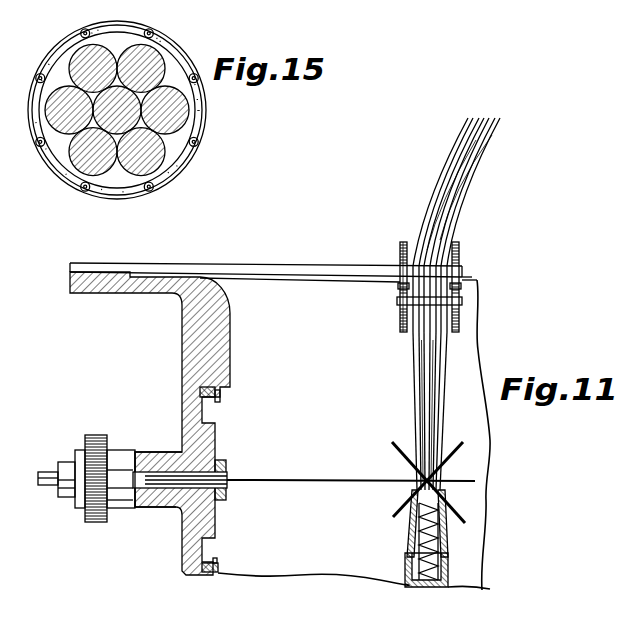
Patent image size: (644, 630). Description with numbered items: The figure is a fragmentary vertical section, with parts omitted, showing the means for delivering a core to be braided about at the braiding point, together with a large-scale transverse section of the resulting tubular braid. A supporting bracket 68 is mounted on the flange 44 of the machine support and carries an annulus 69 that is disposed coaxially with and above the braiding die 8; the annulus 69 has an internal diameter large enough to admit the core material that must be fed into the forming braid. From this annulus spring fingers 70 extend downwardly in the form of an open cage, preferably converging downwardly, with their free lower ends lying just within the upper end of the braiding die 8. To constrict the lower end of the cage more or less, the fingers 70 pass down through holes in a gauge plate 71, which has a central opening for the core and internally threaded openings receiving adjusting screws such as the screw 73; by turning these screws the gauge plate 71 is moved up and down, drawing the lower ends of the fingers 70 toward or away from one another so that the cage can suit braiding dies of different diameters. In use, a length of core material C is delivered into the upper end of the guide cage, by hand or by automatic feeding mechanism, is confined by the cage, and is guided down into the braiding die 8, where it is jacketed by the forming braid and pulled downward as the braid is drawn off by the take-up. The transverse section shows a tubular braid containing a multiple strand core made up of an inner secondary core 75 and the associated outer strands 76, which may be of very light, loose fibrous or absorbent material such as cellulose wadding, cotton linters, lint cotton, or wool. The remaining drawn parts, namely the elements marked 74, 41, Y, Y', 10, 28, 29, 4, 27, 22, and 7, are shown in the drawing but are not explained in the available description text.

In FIG. 15, the outer sheath 74 is at (132, 110).
In FIG. 15, the armor band 41 is at (86, 190).
In FIG. 15, the spreader arm Y is at (117, 131).
In FIG. 11, the spreader arm Y is at (405, 477).
In FIG. 15, the spreader arm Y' is at (111, 125).
In FIG. 11, the spreader arm Y' is at (409, 479).
In FIG. 15, the inner secondary core 75 is at (115, 104).
In FIG. 15, the outer strands 76 is at (168, 76).
In FIG. 11, the flange 44 is at (88, 294).
In FIG. 11, the frame 10 is at (212, 413).
In FIG. 11, the hub 28 is at (166, 504).
In FIG. 11, the bushing 29 is at (236, 459).
In FIG. 11, the shaft 4 is at (303, 479).
In FIG. 11, the gear 27 is at (96, 444).
In FIG. 11, the screw 22 is at (222, 397).
In FIG. 11, the supporting bracket 68 is at (278, 263).
In FIG. 11, the annulus 69 is at (463, 272).
In FIG. 11, the gauge plate 71 is at (397, 302).
In FIG. 11, the adjusting screw 73 is at (401, 318).
In FIG. 11, the core material C is at (468, 182).
In FIG. 11, the spring fingers 70 is at (418, 372).
In FIG. 11, the braiding die 8 is at (447, 542).
In FIG. 11, the socket 7 is at (448, 579).